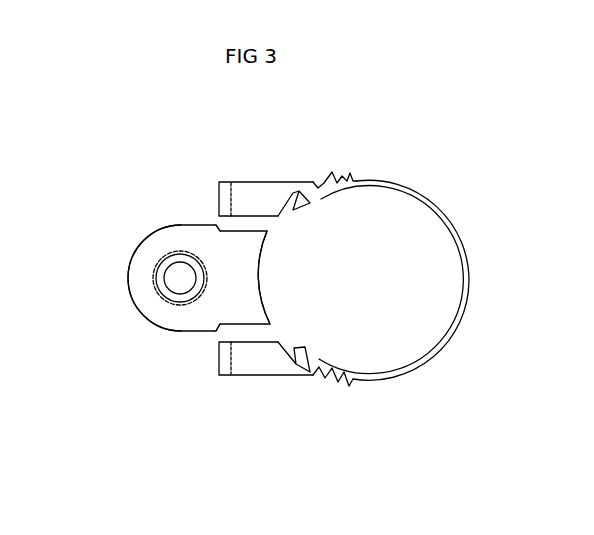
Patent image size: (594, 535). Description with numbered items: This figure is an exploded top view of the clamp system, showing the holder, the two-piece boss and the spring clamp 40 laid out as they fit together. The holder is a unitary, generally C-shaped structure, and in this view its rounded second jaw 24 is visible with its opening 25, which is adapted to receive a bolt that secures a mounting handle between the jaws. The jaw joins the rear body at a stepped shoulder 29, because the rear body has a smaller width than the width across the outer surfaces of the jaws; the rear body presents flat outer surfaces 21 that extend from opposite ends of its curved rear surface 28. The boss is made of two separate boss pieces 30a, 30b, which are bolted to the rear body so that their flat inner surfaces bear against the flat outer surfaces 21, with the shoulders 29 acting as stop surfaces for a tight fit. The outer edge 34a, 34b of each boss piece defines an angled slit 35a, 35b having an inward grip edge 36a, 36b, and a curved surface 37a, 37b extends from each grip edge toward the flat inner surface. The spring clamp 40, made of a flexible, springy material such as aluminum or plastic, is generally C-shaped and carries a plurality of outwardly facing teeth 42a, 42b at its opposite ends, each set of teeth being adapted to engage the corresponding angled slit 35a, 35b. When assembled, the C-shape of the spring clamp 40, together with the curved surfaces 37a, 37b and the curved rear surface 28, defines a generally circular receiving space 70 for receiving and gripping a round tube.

The flat outer surface 21 is at (191, 321).
The second jaw 24 is at (108, 290).
The opening 25 is at (129, 253).
The curved rear surface 28 is at (294, 277).
The stepped shoulder 29 is at (185, 273).
The boss piece 30a is at (224, 178).
The boss piece 30b is at (224, 393).
The outer edge 34a is at (353, 140).
The outer edge 34b is at (368, 413).
The angled slit 35a is at (263, 174).
The angled slit 35b is at (334, 339).
The grip edge 36a is at (350, 219).
The grip edge 36b is at (349, 344).
The curved surface 37a is at (314, 236).
The curved surface 37b is at (248, 420).
The spring clamp 40 is at (438, 280).
The teeth 42a is at (364, 164).
The teeth 42b is at (381, 395).
The receiving space 70 is at (411, 284).